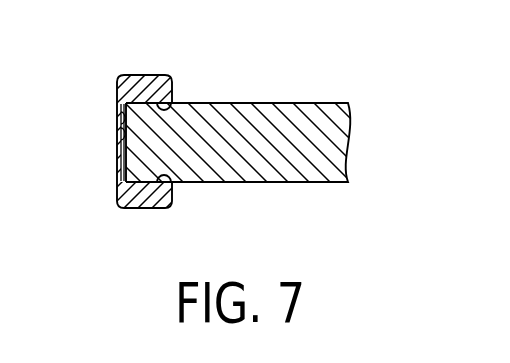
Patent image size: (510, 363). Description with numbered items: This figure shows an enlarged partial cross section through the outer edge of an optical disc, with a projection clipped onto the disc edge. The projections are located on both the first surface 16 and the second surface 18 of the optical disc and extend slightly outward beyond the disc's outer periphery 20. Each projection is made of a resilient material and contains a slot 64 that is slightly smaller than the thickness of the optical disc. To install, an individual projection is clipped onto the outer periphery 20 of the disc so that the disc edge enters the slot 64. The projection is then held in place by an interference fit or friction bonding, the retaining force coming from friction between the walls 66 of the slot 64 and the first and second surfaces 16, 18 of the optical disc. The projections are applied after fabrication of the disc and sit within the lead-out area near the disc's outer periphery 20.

The panel body 16 is at (325, 103).
The bottom surface of panel 18 is at (314, 183).
The edge clip 20 is at (119, 177).
The shim strip 64 is at (120, 107).
The fillet notch 66 is at (180, 103).